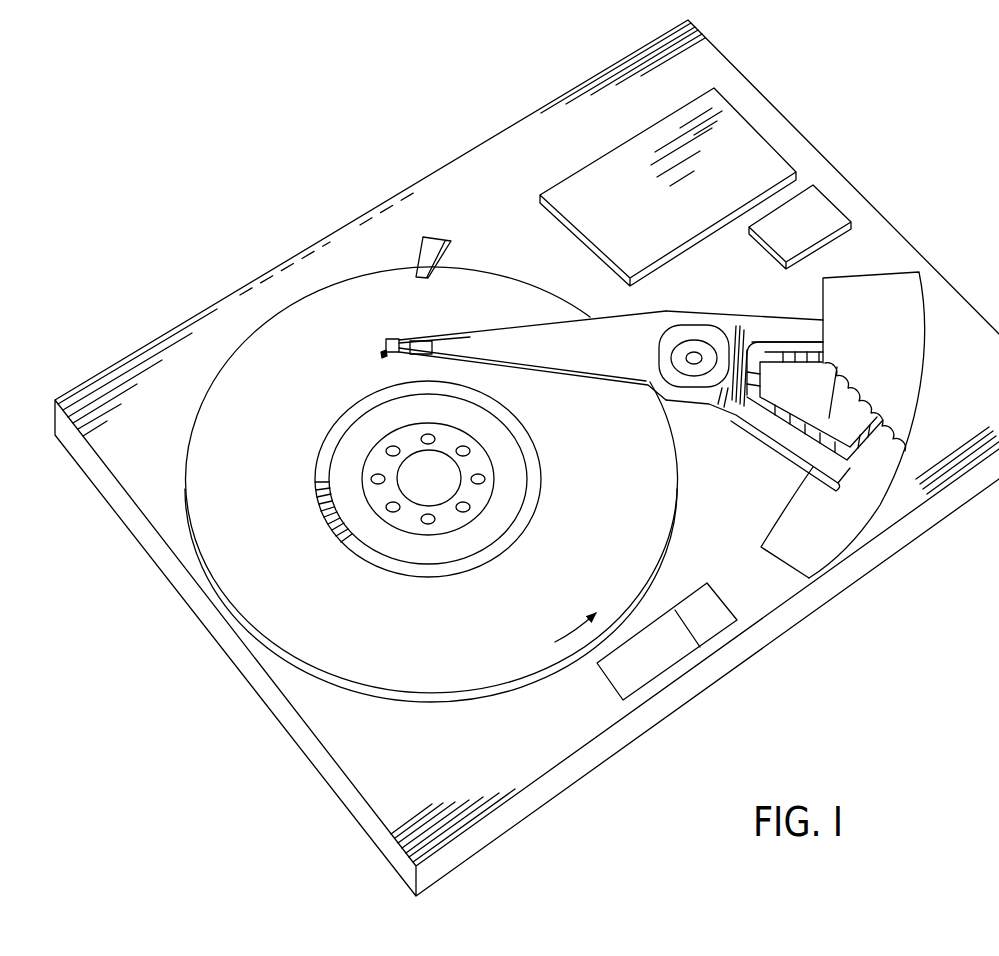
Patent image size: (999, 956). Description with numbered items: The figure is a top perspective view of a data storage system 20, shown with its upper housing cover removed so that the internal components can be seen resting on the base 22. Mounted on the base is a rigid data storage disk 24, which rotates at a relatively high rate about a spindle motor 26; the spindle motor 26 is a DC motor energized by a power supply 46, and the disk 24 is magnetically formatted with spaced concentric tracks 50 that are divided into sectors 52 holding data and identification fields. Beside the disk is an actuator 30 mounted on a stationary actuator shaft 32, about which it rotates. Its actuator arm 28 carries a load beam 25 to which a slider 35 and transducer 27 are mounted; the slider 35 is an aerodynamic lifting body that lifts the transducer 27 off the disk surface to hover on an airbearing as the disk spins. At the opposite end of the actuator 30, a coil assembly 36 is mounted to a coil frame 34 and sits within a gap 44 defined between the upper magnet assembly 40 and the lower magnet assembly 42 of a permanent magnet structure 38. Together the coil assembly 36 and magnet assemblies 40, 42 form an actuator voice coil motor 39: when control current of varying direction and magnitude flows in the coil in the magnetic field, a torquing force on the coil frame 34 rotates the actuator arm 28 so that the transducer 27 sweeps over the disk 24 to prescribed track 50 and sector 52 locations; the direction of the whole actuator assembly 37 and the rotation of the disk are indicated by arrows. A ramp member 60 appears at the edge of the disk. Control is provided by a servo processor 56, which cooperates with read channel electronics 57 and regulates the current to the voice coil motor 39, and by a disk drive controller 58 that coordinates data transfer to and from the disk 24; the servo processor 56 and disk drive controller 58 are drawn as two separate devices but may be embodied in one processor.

The data storage system 20 is at (869, 147).
The base 22 is at (728, 662).
The data storage disk 24 is at (215, 465).
The load beam 25 is at (410, 353).
The spindle motor 26 is at (447, 503).
The transducer 27 is at (383, 355).
The actuator arm 28 is at (535, 353).
The actuator 30 is at (711, 406).
The actuator shaft 32 is at (695, 326).
The coil frame 34 is at (752, 322).
The slider 35 is at (386, 343).
The coil assembly 36 is at (772, 371).
The actuator assembly 37 is at (665, 431).
The permanent magnet structure 38 is at (923, 303).
The actuator voice coil motor 39 is at (808, 471).
The upper magnet assembly 40 is at (911, 351).
The lower magnet assembly 42 is at (781, 548).
The gap 44 is at (893, 445).
The power supply 46 is at (609, 221).
The track 50 is at (322, 432).
The sector 52 is at (319, 507).
The servo processor 56 is at (652, 655).
The read channel electronics 57 is at (690, 630).
The disk drive controller 58 is at (787, 233).
The load ramp 60 is at (440, 237).